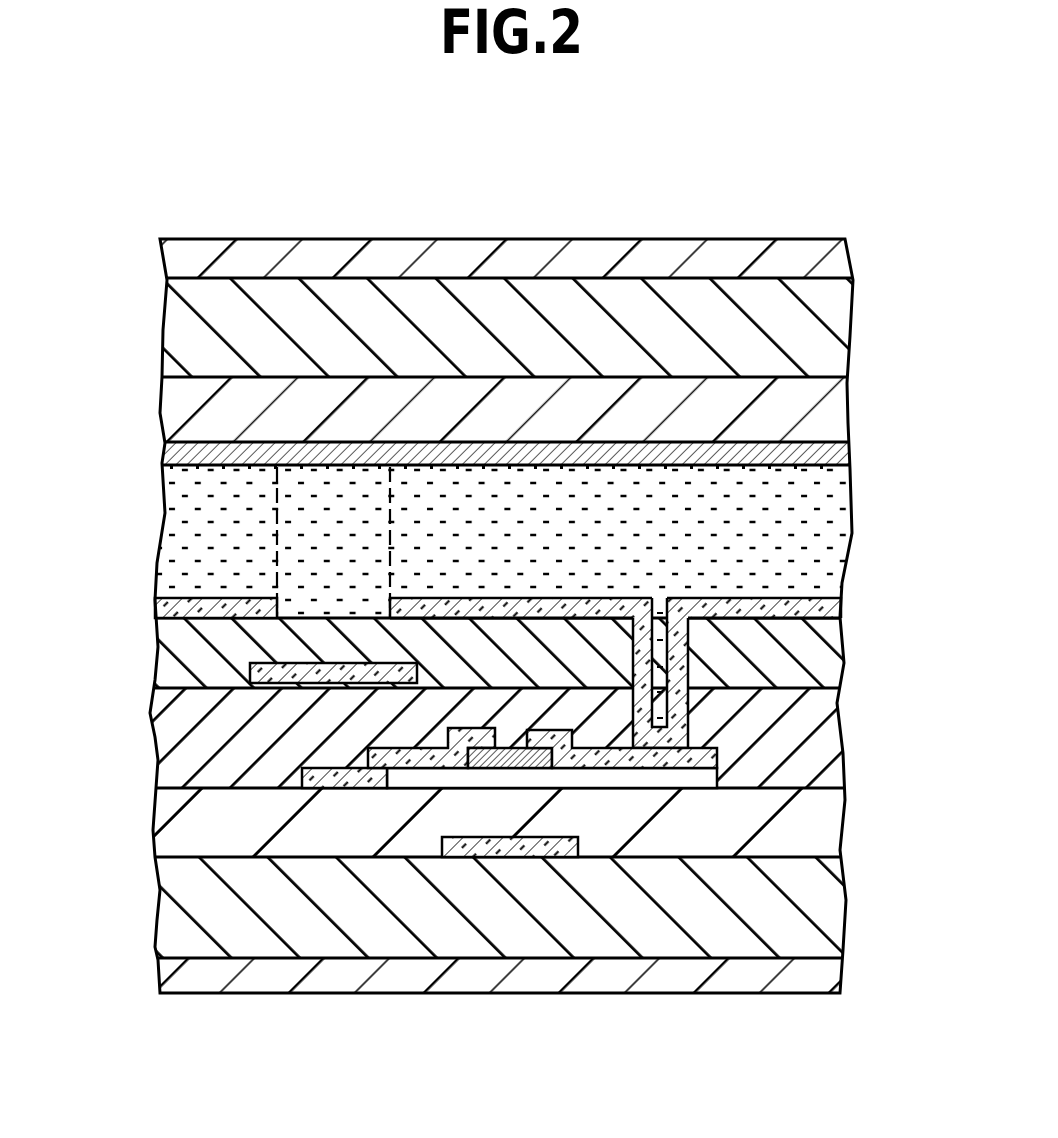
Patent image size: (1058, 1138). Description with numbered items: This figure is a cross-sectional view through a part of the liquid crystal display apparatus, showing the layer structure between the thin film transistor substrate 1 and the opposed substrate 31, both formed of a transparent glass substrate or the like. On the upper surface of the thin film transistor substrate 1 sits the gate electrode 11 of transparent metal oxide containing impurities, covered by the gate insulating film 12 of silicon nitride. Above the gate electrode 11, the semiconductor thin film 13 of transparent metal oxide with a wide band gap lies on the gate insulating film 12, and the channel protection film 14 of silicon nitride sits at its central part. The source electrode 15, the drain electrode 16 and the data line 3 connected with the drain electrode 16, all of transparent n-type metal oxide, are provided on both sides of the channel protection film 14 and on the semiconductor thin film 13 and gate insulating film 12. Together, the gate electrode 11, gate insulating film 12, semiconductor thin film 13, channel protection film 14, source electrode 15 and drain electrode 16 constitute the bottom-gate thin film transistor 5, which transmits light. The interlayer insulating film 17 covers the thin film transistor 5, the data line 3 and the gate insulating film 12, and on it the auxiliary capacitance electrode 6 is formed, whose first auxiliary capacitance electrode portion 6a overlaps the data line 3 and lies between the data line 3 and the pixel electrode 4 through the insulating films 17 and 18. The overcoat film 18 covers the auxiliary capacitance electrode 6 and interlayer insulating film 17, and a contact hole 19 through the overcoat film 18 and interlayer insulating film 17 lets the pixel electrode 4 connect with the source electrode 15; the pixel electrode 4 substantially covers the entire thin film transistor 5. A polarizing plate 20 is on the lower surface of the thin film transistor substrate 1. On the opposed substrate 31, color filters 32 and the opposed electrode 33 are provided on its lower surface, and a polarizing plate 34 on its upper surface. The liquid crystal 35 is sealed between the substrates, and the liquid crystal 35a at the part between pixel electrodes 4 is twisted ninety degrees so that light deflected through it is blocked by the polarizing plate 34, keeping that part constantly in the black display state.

The thin film transistor substrate 1 is at (790, 930).
The data line 3 is at (343, 787).
The pixel electrode 4 is at (229, 608).
The thin film transistor 5 is at (475, 725).
The auxiliary capacitance electrode 6 is at (232, 584).
The first auxiliary capacitance electrode portion 6a is at (340, 662).
The gate electrode 11 is at (507, 850).
The gate insulating film 12 is at (800, 830).
The semiconductor thin film 13 is at (620, 780).
The channel protection film 14 is at (542, 768).
The source electrode 15 is at (687, 760).
The drain electrode 16 is at (425, 770).
The interlayer insulating film 17 is at (797, 730).
The overcoat film 18 is at (807, 647).
The contact hole 19 is at (633, 658).
The polarizing plate 20 is at (800, 980).
The opposed substrate 31 is at (808, 335).
The color filters 32 is at (808, 403).
The opposed electrode 33 is at (693, 458).
The polarizing plate 34 is at (806, 262).
The liquid crystal 35 is at (806, 528).
The liquid crystal 35a is at (334, 498).